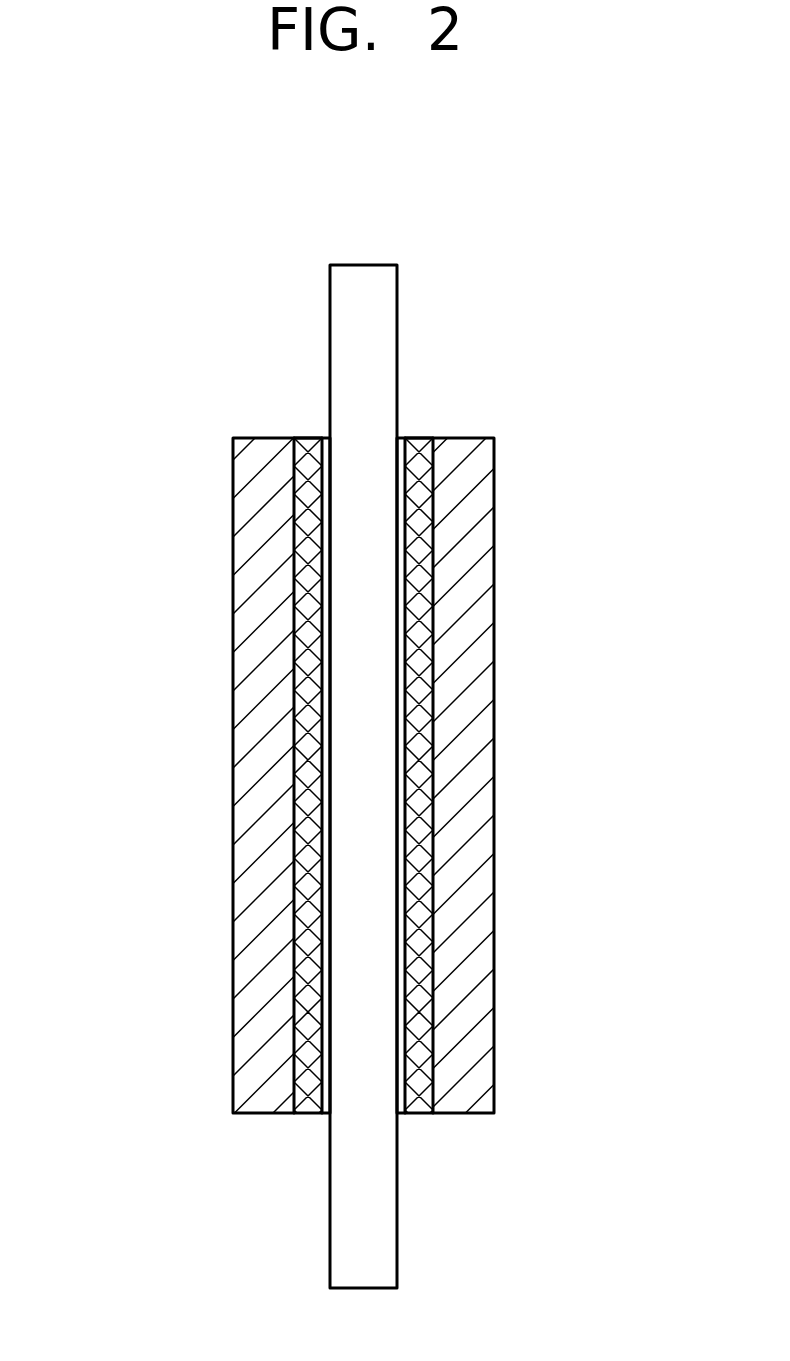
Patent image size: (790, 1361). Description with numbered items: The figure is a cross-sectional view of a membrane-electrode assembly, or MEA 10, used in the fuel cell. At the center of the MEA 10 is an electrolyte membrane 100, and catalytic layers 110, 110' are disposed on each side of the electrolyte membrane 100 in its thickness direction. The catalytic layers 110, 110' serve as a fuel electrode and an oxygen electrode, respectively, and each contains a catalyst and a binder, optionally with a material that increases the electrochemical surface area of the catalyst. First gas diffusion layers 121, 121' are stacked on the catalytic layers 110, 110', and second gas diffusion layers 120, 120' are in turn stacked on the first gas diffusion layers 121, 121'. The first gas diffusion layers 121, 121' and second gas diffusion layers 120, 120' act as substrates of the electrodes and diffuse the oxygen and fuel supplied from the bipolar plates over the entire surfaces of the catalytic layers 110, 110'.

The membrane-electrode assembly 10 is at (158, 300).
The electrolyte membrane 100 is at (360, 277).
The catalytic layer 110 is at (286, 832).
The catalytic layer 110' is at (444, 832).
The second gas diffusion layer 120 is at (201, 775).
The second gas diffusion layer 120' is at (530, 775).
The first gas diffusion layer 121 is at (277, 383).
The first gas diffusion layer 121' is at (451, 383).